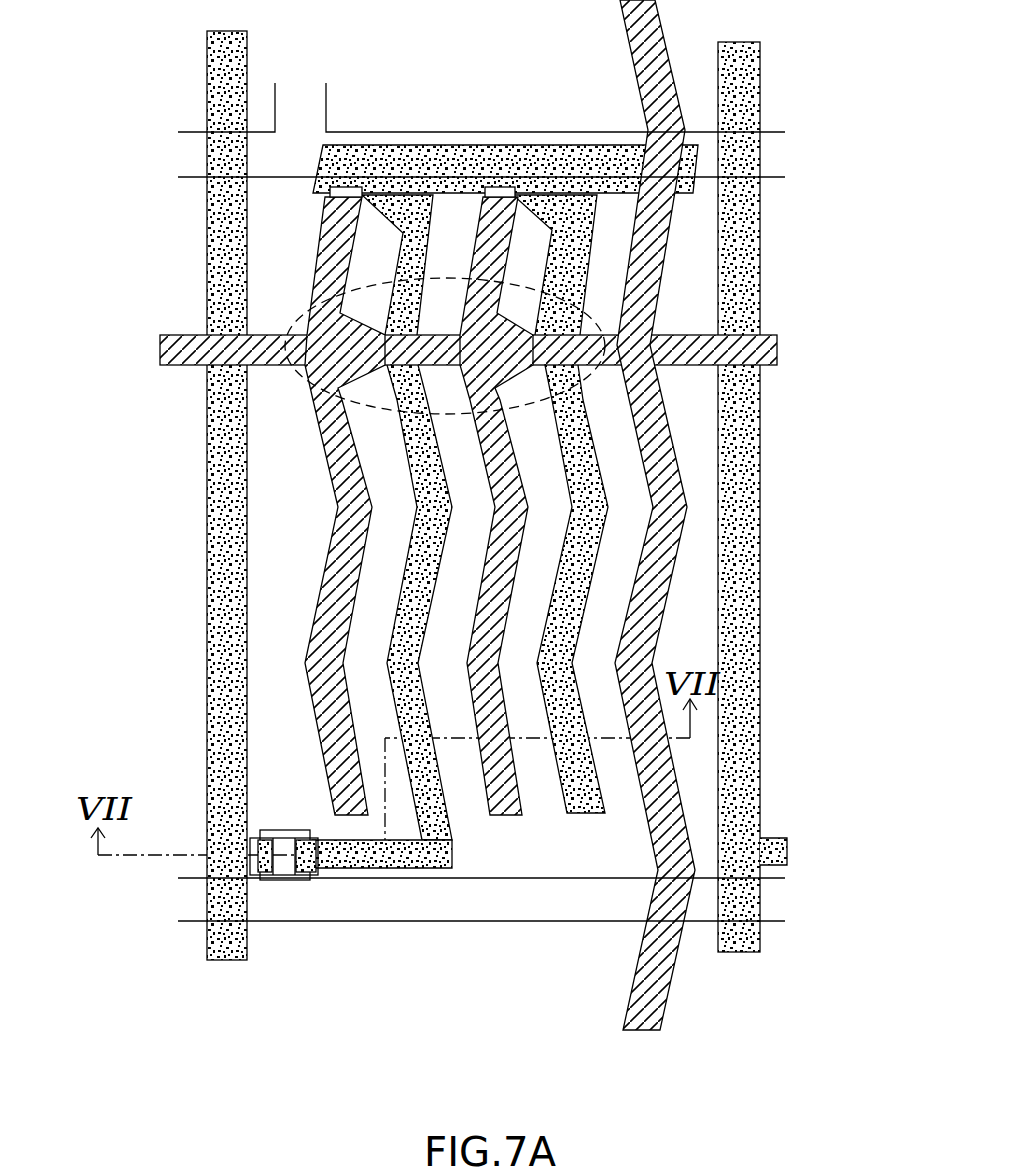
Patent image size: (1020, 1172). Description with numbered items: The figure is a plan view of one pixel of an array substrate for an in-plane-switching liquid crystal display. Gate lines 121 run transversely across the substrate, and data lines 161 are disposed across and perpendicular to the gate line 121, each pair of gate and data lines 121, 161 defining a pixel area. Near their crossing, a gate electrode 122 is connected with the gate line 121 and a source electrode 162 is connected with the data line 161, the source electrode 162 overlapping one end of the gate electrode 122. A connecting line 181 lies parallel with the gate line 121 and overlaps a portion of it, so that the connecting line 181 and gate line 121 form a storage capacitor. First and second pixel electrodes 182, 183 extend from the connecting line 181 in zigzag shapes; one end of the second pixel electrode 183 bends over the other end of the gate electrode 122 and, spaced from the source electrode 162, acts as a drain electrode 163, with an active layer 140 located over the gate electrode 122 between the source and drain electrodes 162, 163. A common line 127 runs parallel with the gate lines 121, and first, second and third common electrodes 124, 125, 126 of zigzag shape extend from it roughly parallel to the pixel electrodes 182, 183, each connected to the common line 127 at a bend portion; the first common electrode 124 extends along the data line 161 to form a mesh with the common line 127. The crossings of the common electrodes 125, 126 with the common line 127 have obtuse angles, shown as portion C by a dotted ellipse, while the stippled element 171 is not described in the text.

The gate line 121 is at (466, 130).
The gate electrode 122 is at (283, 830).
The first common electrode 124 is at (672, 543).
The second common electrode 125 is at (473, 618).
The third common electrode 126 is at (336, 438).
The common line 127 is at (725, 328).
The active layer 140 is at (275, 873).
The data line 161 is at (207, 213).
The source electrode 162 is at (282, 872).
The drain electrode 163 is at (398, 857).
The ohmic contact 171 is at (326, 926).
The connecting line 181 is at (580, 146).
The first pixel electrode 182 is at (590, 463).
The second pixel electrode 183 is at (417, 513).
The portion C is at (292, 323).